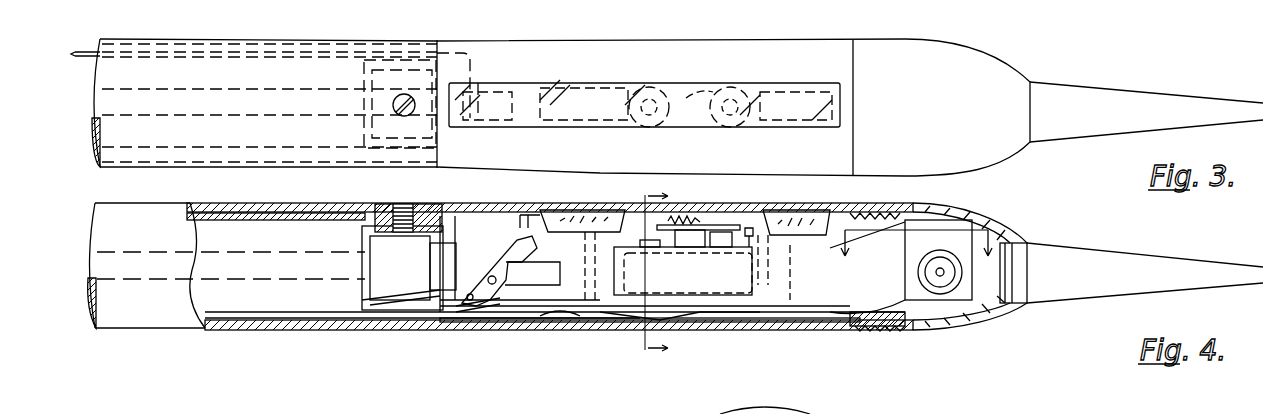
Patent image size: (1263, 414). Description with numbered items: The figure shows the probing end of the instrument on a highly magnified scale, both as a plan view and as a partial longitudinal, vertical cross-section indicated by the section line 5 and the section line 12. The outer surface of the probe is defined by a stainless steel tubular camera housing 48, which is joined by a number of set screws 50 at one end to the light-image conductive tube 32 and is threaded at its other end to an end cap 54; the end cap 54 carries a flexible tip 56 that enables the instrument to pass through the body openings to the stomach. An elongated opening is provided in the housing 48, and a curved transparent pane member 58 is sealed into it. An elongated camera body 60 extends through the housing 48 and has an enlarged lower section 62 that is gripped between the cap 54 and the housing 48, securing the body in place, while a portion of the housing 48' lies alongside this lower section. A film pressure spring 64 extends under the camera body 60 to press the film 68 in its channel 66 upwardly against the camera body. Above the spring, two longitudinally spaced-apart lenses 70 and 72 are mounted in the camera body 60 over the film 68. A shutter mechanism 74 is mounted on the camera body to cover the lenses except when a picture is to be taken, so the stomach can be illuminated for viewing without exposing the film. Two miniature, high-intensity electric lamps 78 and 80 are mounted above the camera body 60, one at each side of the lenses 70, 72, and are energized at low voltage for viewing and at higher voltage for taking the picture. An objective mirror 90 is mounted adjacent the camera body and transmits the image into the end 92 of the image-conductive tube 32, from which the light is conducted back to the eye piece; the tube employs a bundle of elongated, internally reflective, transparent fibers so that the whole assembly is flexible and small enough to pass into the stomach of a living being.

In FIG. 4, the section line 5- 5 is at (661, 281).
In FIG. 4, the section line 12- 12 is at (921, 266).
In FIG. 4, the light-image conductive tube 32 is at (252, 342).
In FIG. 3, the tubular camera housing 48 is at (644, 121).
In FIG. 4, the tubular camera housing 48 is at (650, 353).
In FIG. 4, the housing extension 48' is at (877, 344).
In FIG. 4, the set screws 50 is at (408, 206).
In FIG. 3, the end cap 54 is at (1012, 72).
In FIG. 4, the end cap 54 is at (1007, 320).
In FIG. 3, the flexible tip 56 is at (1142, 92).
In FIG. 4, the flexible tip 56 is at (1142, 265).
In FIG. 3, the curved transparent pane member 58 is at (695, 98).
In FIG. 4, the curved transparent pane member 58 is at (536, 213).
In FIG. 4, the camera body 60 is at (793, 292).
In FIG. 4, the enlarged lower section 62 is at (968, 318).
In FIG. 4, the film pressure spring 64 is at (735, 318).
In FIG. 4, the channel 66 is at (605, 330).
In FIG. 4, the film 68 is at (690, 330).
In FIG. 3, the lens 70 is at (658, 95).
In FIG. 4, the lens 70 is at (648, 243).
In FIG. 3, the lens 72 is at (740, 100).
In FIG. 4, the lens 72 is at (722, 244).
In FIG. 4, the shutter mechanism 74 is at (754, 215).
In FIG. 3, the electric lamp 78 is at (588, 92).
In FIG. 4, the electric lamp 78 is at (588, 214).
In FIG. 3, the electric lamp 80 is at (812, 95).
In FIG. 4, the electric lamp 80 is at (802, 220).
In FIG. 3, the objective mirror 90 is at (500, 97).
In FIG. 4, the objective mirror 90 is at (492, 250).
In FIG. 4, the end of image-conductive tube 92 is at (452, 260).